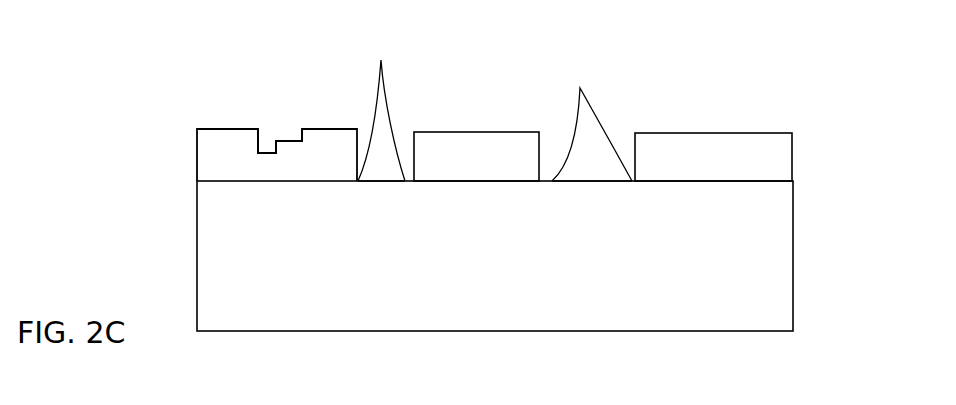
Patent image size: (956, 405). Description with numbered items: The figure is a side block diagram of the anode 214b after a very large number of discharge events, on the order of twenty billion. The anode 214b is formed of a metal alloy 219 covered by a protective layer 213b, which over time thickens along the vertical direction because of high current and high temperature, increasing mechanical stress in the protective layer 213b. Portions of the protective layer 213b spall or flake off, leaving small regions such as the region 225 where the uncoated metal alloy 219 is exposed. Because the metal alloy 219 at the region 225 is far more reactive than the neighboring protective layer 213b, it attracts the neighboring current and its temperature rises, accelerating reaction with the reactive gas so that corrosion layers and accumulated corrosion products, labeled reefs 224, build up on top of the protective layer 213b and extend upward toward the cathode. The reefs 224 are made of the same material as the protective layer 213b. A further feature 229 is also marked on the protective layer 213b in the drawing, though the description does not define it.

The protective layer 213b is at (190, 127).
The anode 214b is at (758, 58).
The metal alloy 219 is at (495, 256).
The reefs 224 is at (383, 89).
The region 225 is at (407, 183).
The notch defect 229 is at (276, 118).